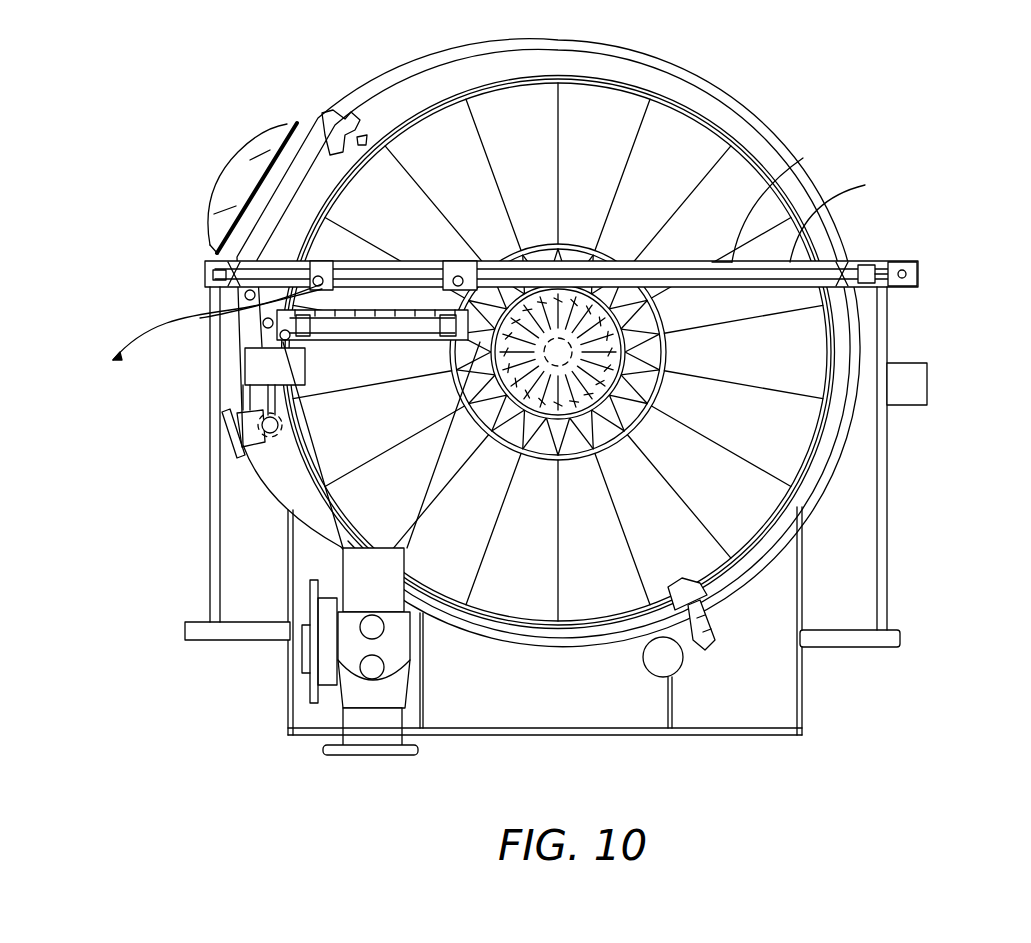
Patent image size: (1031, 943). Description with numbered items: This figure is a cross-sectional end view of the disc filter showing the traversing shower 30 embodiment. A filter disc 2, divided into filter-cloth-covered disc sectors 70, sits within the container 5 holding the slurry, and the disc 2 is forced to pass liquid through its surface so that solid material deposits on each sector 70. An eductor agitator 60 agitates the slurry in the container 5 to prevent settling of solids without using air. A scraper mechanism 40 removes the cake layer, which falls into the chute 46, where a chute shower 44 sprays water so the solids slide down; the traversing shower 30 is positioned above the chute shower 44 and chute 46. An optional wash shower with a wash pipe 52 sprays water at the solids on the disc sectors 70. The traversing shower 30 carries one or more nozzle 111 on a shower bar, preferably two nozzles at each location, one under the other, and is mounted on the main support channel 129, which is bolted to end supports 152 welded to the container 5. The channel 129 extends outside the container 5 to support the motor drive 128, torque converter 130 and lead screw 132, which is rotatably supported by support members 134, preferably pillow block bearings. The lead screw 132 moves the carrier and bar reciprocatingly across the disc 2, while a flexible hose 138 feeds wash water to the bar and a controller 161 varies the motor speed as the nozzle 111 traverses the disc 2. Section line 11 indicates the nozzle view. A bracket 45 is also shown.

The disc 2 is at (588, 82).
The container 5 is at (677, 70).
The section line 11- 11 is at (328, 310).
The traversing shower 30 is at (190, 244).
The scraper mechanism 40 is at (262, 314).
The chute shower 44 is at (262, 357).
The mounting bracket 45 is at (236, 400).
The chute 46 is at (342, 465).
The wash pipe 52 is at (845, 218).
The eductor agitator 60 is at (690, 576).
The disc sector 70 is at (818, 360).
The nozzle 111 is at (327, 308).
The motor drive 128 is at (914, 257).
The main support channel 129 is at (755, 200).
The torque converter 130 is at (862, 263).
The lead screw 132 is at (742, 258).
The support member 134 is at (842, 262).
The flexible hose 138 is at (191, 322).
The end supports 152 is at (210, 490).
The controller 161 is at (927, 383).